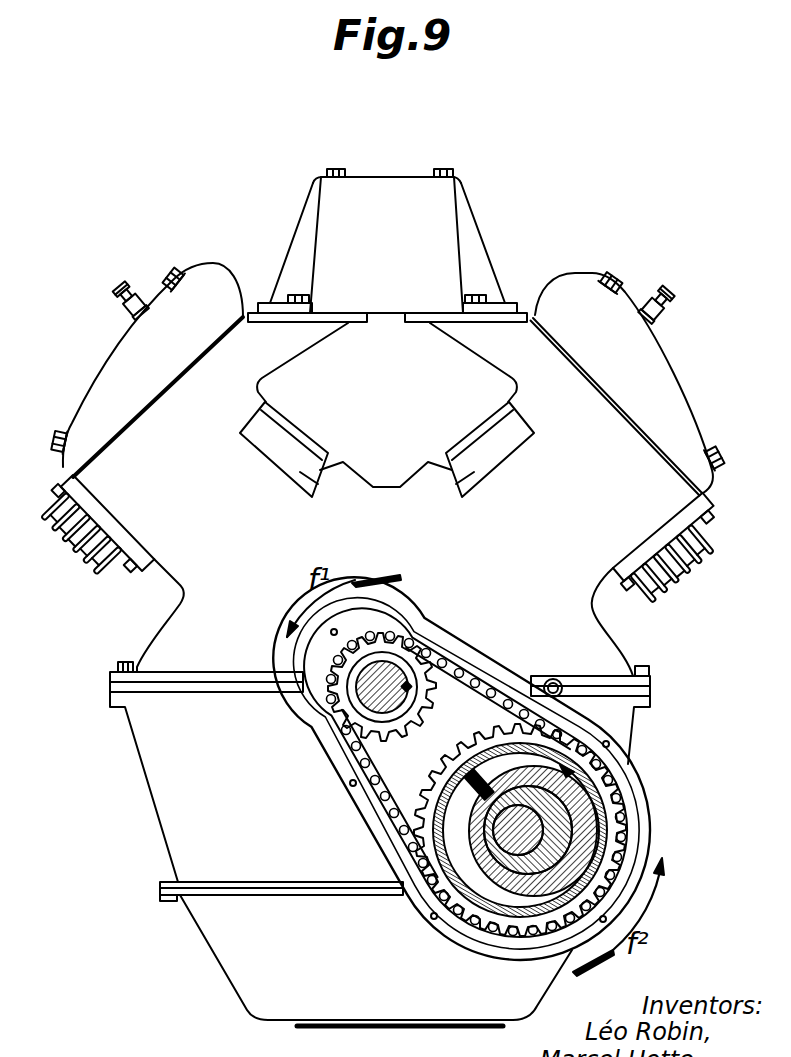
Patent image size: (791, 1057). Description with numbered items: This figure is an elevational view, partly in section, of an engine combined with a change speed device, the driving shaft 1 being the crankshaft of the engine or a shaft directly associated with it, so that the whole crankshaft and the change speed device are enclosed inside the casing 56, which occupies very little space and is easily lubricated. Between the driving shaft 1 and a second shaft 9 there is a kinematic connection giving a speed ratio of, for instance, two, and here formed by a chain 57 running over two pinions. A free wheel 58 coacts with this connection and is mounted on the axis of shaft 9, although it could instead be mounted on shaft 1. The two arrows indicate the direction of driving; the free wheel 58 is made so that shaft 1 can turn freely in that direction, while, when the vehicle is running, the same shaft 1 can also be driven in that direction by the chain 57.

The driving shaft 1 is at (408, 684).
The shaft 9 is at (532, 829).
The casing 56 is at (160, 781).
The chain 57 is at (350, 788).
The free wheel 58 is at (597, 784).